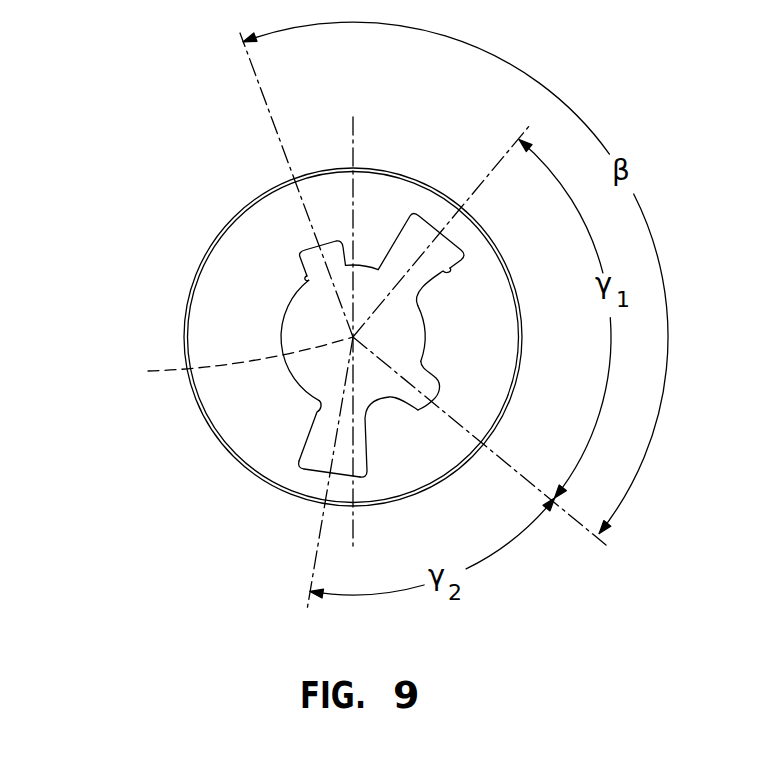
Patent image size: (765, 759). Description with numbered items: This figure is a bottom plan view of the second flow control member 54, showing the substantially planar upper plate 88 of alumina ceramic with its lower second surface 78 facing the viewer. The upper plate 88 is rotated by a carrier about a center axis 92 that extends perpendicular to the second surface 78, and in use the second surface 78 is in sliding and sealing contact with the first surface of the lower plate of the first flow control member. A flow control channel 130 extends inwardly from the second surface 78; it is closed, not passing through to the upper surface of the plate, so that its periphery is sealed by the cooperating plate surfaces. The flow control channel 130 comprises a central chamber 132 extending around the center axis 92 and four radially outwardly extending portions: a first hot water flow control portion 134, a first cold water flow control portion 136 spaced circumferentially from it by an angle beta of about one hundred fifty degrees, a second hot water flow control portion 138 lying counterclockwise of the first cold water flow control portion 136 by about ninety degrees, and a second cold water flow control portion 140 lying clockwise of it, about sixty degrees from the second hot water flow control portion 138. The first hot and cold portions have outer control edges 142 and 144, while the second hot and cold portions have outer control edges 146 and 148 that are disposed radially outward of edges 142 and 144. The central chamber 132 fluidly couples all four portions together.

The second flow control member 54 is at (186, 171).
The second surface 78 is at (259, 315).
The upper plate 88 is at (196, 277).
The center axis 92 is at (233, 364).
The flow control channel 130 is at (301, 367).
The central chamber 132 is at (403, 335).
The first hot water flow control portion 134 is at (304, 272).
The first cold water flow control portion 136 is at (417, 411).
The second hot water flow control portion 138 is at (445, 268).
The second cold water flow control portion 140 is at (318, 441).
The outer control edge 142 is at (306, 250).
The outer control edge 144 is at (438, 386).
The outer control edge 146 is at (431, 222).
The outer control edge 148 is at (312, 473).